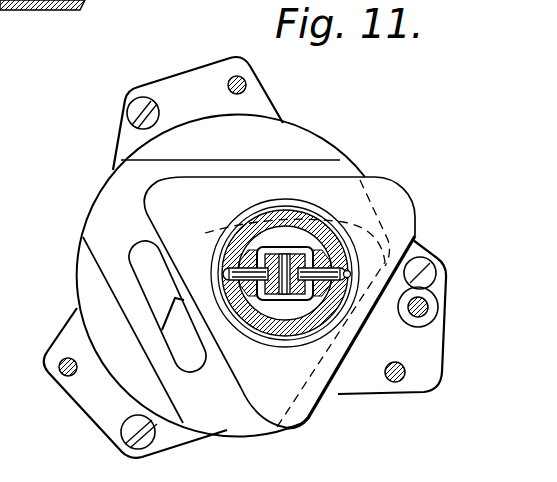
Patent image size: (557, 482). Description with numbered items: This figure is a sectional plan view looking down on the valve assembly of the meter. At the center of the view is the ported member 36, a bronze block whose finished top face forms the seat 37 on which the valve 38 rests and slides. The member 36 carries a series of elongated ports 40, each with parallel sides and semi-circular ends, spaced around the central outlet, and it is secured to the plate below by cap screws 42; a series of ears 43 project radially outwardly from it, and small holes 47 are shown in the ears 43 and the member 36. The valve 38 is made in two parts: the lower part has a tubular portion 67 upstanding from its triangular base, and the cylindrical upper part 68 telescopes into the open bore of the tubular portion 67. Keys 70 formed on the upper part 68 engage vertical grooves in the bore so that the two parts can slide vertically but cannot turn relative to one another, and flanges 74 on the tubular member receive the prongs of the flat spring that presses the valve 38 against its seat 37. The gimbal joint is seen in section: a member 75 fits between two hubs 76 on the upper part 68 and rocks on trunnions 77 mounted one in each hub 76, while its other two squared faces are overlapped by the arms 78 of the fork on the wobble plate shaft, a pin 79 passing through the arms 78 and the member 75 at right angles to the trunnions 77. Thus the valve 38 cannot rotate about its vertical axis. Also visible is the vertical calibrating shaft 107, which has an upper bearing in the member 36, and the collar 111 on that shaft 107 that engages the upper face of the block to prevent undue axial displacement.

The ported member 36 is at (77, 280).
The seat 37 is at (211, 411).
The valve 38 is at (404, 206).
The elongated ports 40 is at (142, 258).
The cap screws 42 is at (130, 114).
The ears 43 is at (258, 98).
The pin hole 47 is at (246, 82).
The tubular portion 67 is at (302, 250).
The upper part 68 is at (272, 345).
The keys 70 is at (252, 223).
The flanges 74 is at (42, 30).
The member 75 is at (316, 252).
The hubs 76 is at (250, 297).
The trunnions 77 is at (232, 268).
The arms 78 is at (294, 253).
The pin 79 is at (281, 249).
The vertical shaft 107 is at (430, 308).
The collar 111 is at (426, 321).